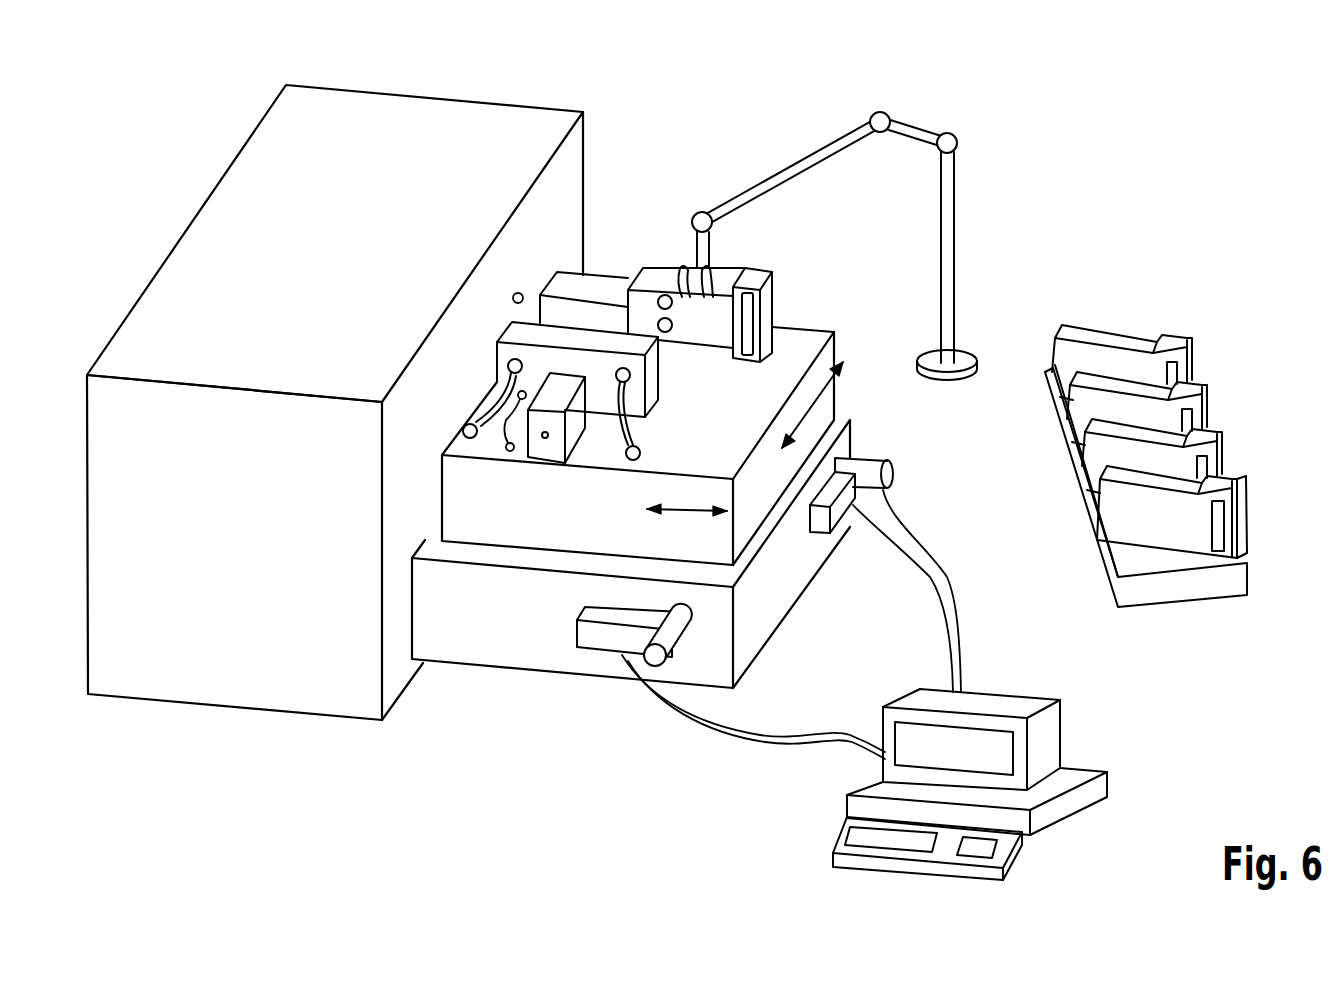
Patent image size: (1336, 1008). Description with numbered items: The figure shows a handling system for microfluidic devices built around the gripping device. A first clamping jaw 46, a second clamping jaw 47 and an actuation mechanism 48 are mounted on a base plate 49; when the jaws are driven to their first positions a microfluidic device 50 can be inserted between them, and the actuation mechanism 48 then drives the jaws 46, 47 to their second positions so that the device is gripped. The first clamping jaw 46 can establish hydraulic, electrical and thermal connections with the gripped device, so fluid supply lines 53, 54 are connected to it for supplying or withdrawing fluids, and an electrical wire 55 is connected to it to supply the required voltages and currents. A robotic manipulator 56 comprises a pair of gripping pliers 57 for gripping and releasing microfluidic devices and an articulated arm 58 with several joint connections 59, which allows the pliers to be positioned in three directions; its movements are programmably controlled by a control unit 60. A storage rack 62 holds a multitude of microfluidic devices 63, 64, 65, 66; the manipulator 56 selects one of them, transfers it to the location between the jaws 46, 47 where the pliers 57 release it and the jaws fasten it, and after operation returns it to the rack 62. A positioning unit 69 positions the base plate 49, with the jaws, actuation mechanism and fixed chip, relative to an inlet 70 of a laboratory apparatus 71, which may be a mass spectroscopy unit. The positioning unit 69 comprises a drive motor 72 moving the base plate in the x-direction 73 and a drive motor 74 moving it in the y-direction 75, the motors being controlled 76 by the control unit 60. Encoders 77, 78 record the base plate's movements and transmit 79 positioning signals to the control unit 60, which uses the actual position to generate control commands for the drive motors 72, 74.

The first clamping jaw 46 is at (512, 328).
The second clamping jaw 47 is at (597, 287).
The actuation mechanism 48 is at (577, 438).
The base plate 49 is at (810, 335).
The microfluidic device 50 is at (750, 278).
The fluid supply line 53 is at (472, 440).
The fluid supply line 54 is at (637, 447).
The electrical wire 55 is at (511, 452).
The robotic manipulator 56 is at (923, 148).
The gripping pliers 57 is at (675, 273).
The articulated arm 58 is at (793, 160).
The joint connection 59 is at (880, 113).
The control unit 60 is at (1048, 738).
The storage rack 62 is at (1170, 563).
The microfluidic device 63 is at (1188, 357).
The microfluidic device 64 is at (1197, 403).
The microfluidic device 65 is at (1212, 449).
The microfluidic device 66 is at (1226, 498).
The positioning unit 69 is at (494, 656).
The inlet 70 is at (513, 298).
The laboratory apparatus 71 is at (316, 698).
The drive motor 72 is at (680, 630).
The x-direction 73 is at (688, 512).
The drive motor 74 is at (893, 473).
The y-direction 75 is at (815, 407).
The control connection 76 is at (741, 727).
The encoder 77 is at (592, 638).
The encoder 78 is at (820, 520).
The positioning signal transmission 79 is at (688, 722).